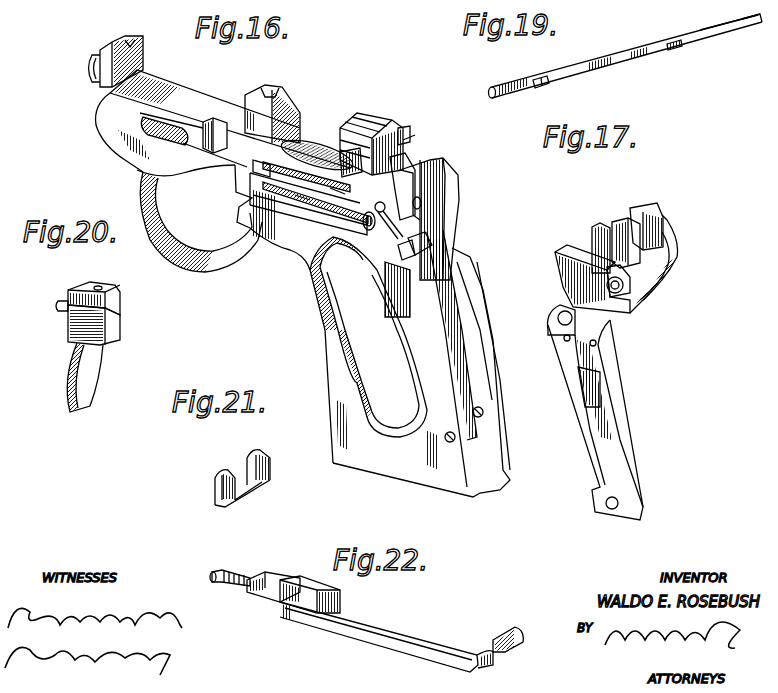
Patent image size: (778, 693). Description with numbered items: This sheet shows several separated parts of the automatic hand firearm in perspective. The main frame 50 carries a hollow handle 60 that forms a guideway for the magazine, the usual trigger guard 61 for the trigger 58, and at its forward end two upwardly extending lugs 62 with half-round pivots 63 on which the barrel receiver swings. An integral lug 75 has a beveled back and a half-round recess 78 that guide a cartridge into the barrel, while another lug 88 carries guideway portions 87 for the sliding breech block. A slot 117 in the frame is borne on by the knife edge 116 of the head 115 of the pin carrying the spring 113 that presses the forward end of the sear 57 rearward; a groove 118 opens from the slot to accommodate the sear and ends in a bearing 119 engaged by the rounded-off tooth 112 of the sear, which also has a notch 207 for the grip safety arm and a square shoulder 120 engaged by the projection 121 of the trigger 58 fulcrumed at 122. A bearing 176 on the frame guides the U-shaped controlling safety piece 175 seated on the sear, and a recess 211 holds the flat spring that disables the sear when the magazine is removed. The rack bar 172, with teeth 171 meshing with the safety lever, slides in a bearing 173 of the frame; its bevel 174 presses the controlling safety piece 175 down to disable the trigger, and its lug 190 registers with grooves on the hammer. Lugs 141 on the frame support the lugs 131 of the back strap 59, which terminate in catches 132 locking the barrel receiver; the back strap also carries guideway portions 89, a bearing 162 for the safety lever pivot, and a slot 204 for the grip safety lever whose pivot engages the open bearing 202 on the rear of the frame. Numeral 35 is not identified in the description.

In FIG. 16, the handle 60 is at (341, 398).
In FIG. 16, the lugs 62 is at (115, 52).
In FIG. 16, the half-round pivots 63 is at (90, 70).
In FIG. 16, the slot 117 is at (153, 128).
In FIG. 16, the bearing 176 is at (219, 120).
In FIG. 16, the lug 75 is at (290, 105).
In FIG. 16, the half-round recess 78 is at (268, 88).
In FIG. 16, the main frame 50 is at (316, 137).
In FIG. 16, the guideway portions 87 is at (344, 152).
In FIG. 16, the lug 88 is at (383, 125).
In FIG. 16, the bearing 173 is at (445, 185).
In FIG. 16, the lugs 141 is at (388, 233).
In FIG. 16, the open bearing 202 is at (418, 237).
In FIG. 16, the trigger guard 61 is at (211, 266).
In FIG. 16, the groove 118 is at (303, 197).
In FIG. 16, the recess 211 is at (338, 190).
In FIG. 16, the bearing 119 is at (323, 282).
In FIG. 19, the teeth 171 is at (505, 85).
In FIG. 19, the lug 190 is at (538, 88).
In FIG. 19, the rack bar 172 is at (676, 46).
In FIG. 19, the bevel 174 is at (758, 25).
In FIG. 17, the lugs 131 is at (575, 257).
In FIG. 17, the catches 132 is at (590, 240).
In FIG. 17, the guideway portions 89 is at (603, 225).
In FIG. 17, the bearing 162 is at (647, 304).
In FIG. 17, the sear 35 is at (557, 335).
In FIG. 17, the back strap 59 is at (598, 420).
In FIG. 17, the slot 204 is at (592, 390).
In FIG. 20, the trigger 58 is at (78, 358).
In FIG. 20, the projection 121 is at (78, 291).
In FIG. 20, the fulcrum 122 is at (57, 306).
In FIG. 21, the controlling safety piece 175 is at (242, 476).
In FIG. 22, the sear 57 is at (379, 637).
In FIG. 22, the square shoulder 120 is at (340, 597).
In FIG. 22, the spring 113 is at (252, 575).
In FIG. 22, the knife edge 116 is at (215, 572).
In FIG. 22, the head 115 is at (215, 585).
In FIG. 22, the tooth 112 is at (512, 630).
In FIG. 22, the notch 207 is at (500, 664).